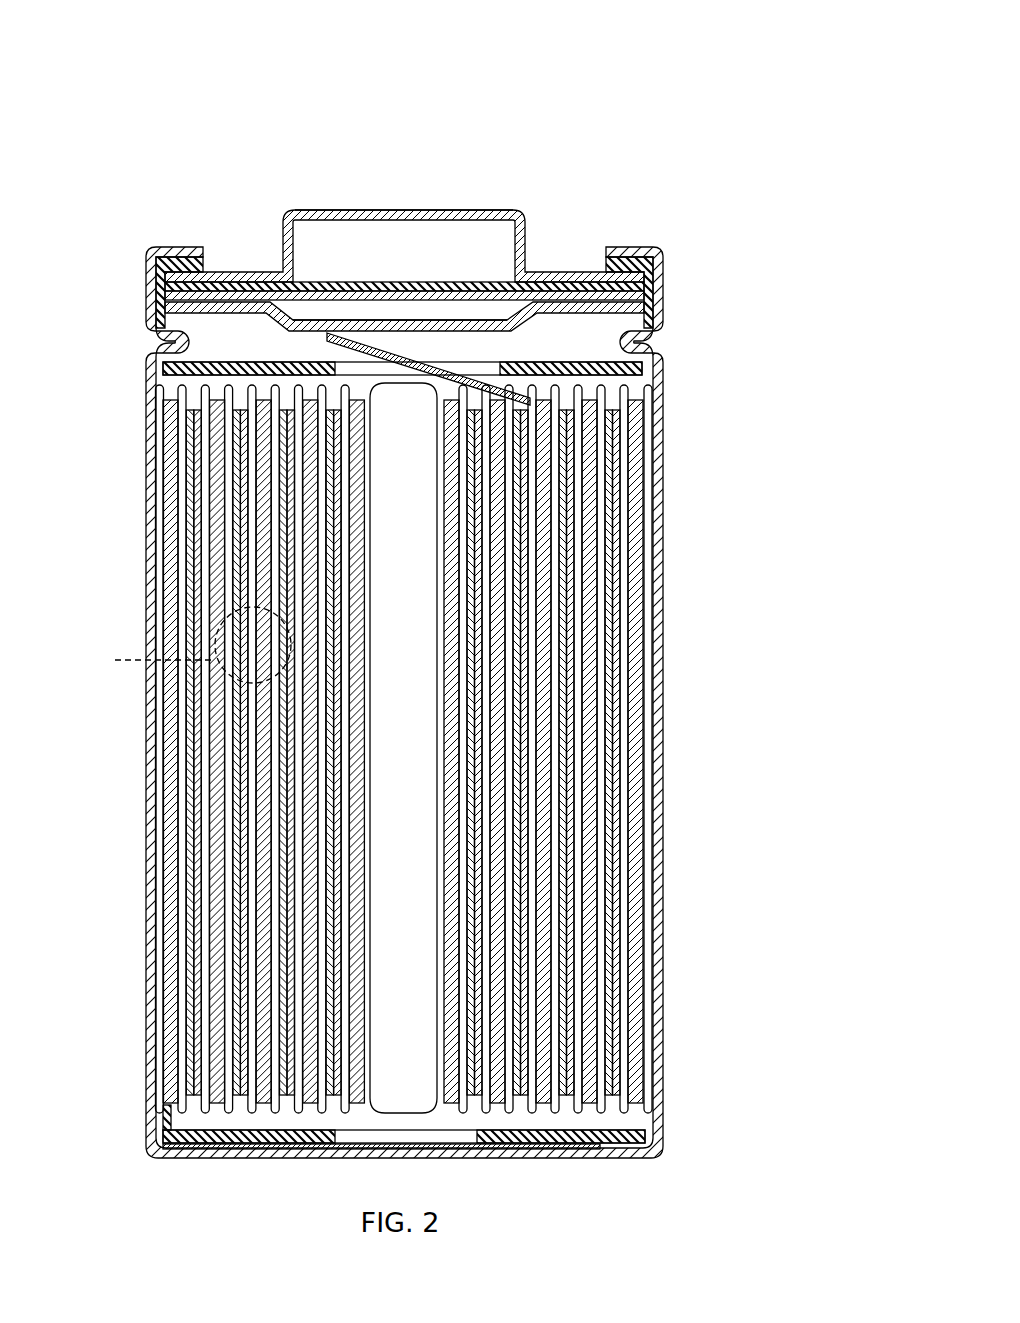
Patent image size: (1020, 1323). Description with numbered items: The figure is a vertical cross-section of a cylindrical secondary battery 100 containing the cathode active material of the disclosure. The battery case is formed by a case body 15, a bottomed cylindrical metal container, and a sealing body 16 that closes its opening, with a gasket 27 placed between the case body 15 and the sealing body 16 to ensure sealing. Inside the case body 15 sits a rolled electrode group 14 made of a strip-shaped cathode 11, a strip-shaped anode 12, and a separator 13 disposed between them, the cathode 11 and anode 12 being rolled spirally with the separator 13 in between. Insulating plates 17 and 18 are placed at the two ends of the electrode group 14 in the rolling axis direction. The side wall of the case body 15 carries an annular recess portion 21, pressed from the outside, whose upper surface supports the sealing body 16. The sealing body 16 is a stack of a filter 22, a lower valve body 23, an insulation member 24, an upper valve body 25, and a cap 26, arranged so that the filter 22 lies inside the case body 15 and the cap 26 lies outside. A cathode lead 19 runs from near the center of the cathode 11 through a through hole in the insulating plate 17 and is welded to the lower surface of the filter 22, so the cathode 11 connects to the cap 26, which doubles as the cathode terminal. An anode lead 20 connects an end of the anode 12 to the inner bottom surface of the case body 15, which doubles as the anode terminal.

The secondary battery 100 is at (654, 96).
The cathode 11 is at (616, 825).
The anode 12 is at (638, 870).
The separator 13 is at (623, 917).
The electrode group 14 is at (491, 748).
The case body 15 is at (677, 254).
The sealing body 16 is at (525, 200).
The insulating plate 17 is at (655, 372).
The insulating plate 18 is at (634, 1138).
The cathode lead 19 is at (330, 350).
The anode lead 20 is at (160, 1134).
The recess portion 21 is at (160, 370).
The filter 22 is at (408, 318).
The lower valve body 23 is at (307, 300).
The insulation member 24 is at (227, 290).
The upper valve body 25 is at (336, 286).
The cap 26 is at (481, 210).
The gasket 27 is at (665, 262).